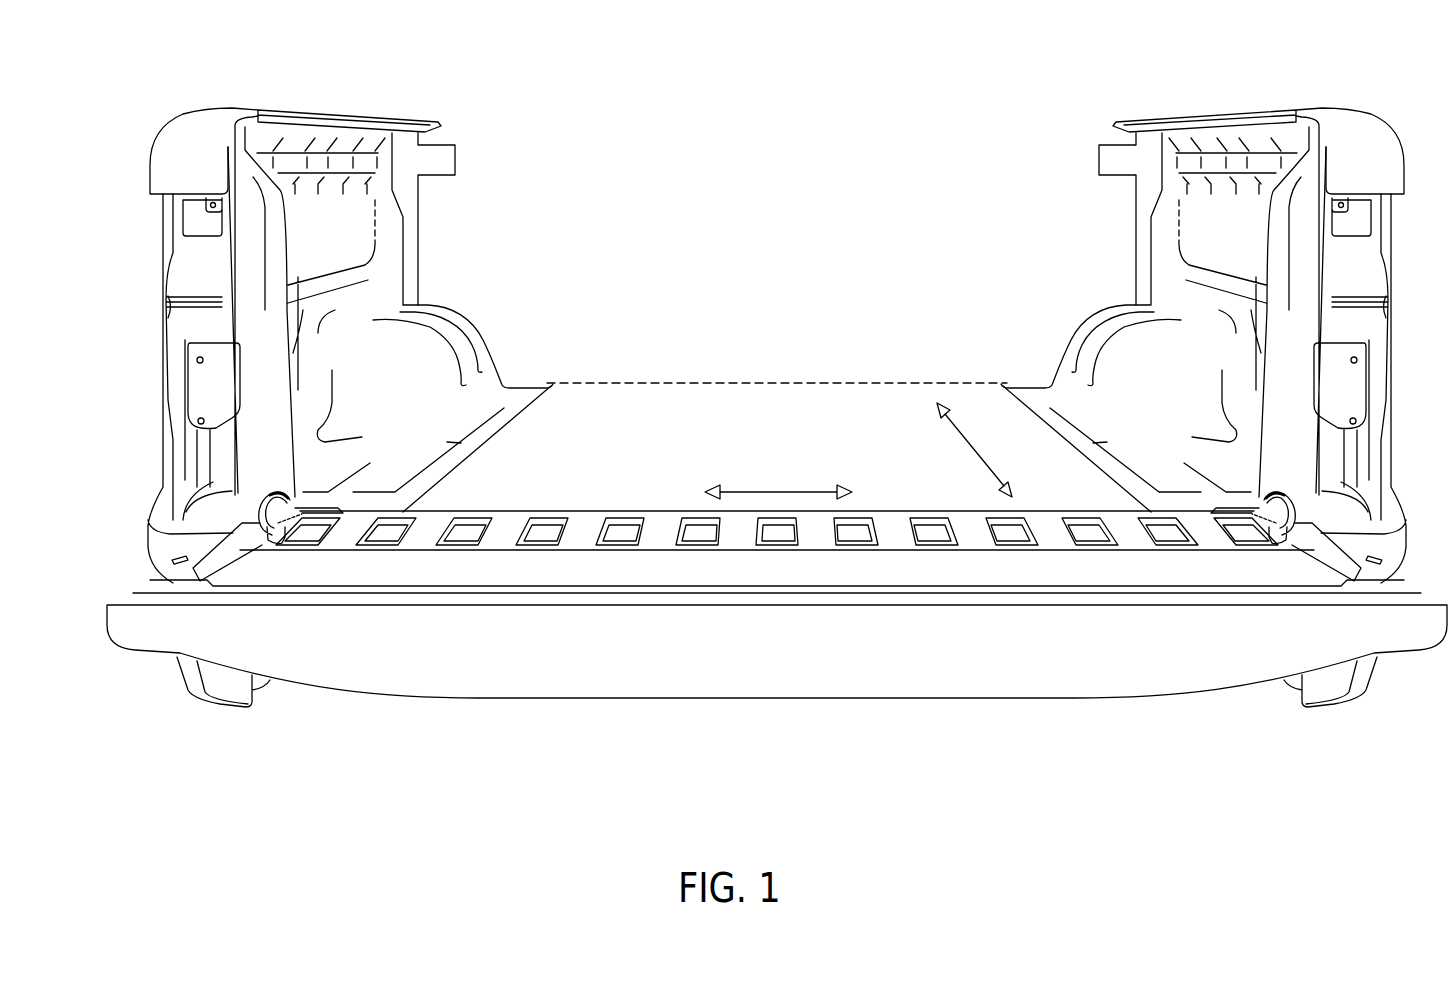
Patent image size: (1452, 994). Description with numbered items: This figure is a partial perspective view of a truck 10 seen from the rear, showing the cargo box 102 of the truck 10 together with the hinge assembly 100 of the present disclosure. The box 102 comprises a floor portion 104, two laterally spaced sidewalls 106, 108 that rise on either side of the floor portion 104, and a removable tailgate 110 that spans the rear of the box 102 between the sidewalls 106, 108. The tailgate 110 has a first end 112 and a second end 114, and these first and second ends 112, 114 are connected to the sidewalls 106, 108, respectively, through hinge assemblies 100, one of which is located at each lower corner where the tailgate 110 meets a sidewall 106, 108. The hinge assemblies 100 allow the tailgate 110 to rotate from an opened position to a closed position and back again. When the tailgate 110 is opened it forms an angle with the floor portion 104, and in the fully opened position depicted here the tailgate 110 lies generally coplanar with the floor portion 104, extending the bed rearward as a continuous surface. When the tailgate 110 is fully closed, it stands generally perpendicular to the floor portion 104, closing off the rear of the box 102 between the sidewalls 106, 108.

The truck 10 is at (579, 118).
The hinge assembly 100 is at (263, 494).
The box 102 is at (1287, 106).
The floor portion 104 is at (796, 428).
The sidewall 106 is at (197, 278).
The sidewall 108 is at (1357, 278).
The removable tailgate 110 is at (616, 672).
The first end 112 is at (133, 600).
The second end 114 is at (1421, 600).